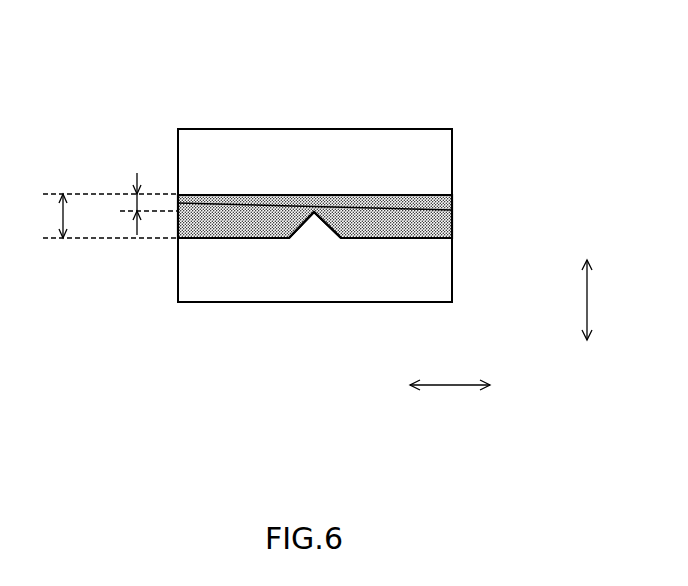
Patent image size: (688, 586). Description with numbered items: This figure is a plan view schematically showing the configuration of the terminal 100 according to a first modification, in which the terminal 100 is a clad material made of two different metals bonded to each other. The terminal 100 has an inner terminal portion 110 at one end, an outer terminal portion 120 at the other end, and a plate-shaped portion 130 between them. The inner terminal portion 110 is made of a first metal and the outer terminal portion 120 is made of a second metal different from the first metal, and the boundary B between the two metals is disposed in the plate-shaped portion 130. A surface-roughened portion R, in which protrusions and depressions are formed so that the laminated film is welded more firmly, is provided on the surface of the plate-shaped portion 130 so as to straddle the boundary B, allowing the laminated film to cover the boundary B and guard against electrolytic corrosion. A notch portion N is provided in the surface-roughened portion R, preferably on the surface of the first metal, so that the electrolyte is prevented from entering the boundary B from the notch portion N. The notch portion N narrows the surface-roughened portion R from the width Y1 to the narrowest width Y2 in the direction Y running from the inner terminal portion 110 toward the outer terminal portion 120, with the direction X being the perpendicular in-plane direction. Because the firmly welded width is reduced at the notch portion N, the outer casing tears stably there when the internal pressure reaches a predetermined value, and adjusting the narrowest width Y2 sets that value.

The terminal 100 is at (357, 183).
The inner terminal portion 110 is at (220, 289).
The outer terminal portion 120 is at (221, 128).
The plate-shaped portion 130 is at (442, 221).
The boundary B is at (420, 203).
The surface-roughened portion R is at (357, 194).
The notch portion N is at (321, 222).
The width of the surface-roughened portion Y1 is at (103, 216).
The narrowest width Y2 is at (137, 203).
The direction X is at (450, 398).
The direction Y is at (596, 300).